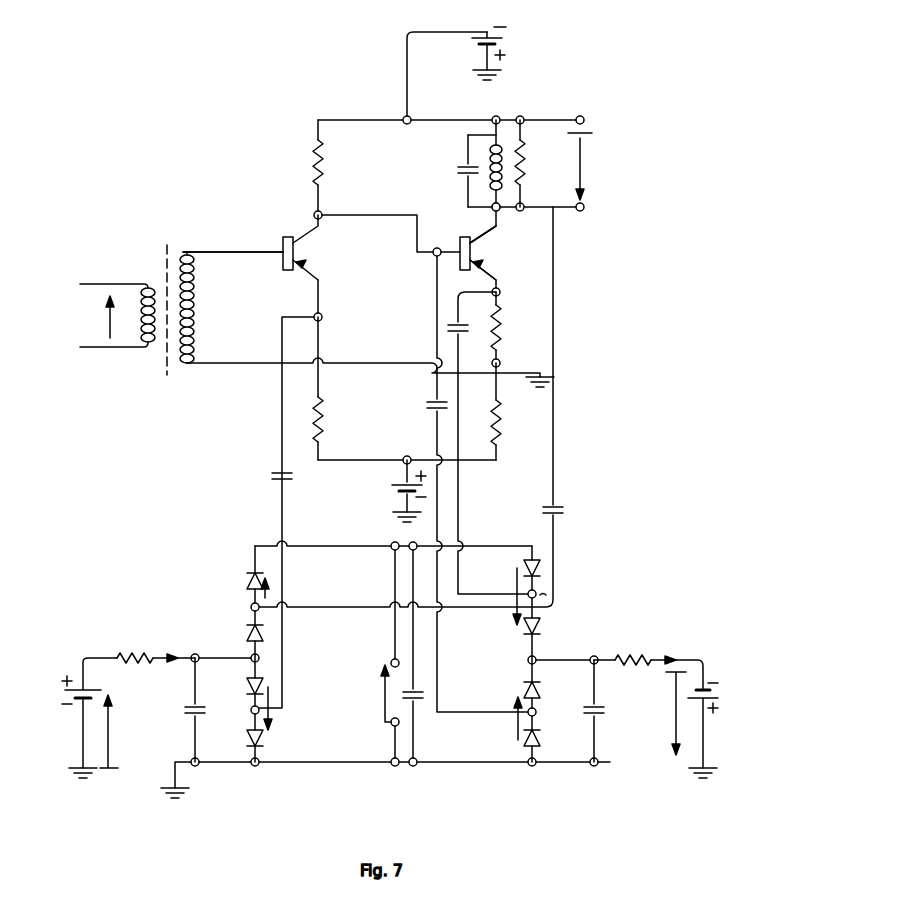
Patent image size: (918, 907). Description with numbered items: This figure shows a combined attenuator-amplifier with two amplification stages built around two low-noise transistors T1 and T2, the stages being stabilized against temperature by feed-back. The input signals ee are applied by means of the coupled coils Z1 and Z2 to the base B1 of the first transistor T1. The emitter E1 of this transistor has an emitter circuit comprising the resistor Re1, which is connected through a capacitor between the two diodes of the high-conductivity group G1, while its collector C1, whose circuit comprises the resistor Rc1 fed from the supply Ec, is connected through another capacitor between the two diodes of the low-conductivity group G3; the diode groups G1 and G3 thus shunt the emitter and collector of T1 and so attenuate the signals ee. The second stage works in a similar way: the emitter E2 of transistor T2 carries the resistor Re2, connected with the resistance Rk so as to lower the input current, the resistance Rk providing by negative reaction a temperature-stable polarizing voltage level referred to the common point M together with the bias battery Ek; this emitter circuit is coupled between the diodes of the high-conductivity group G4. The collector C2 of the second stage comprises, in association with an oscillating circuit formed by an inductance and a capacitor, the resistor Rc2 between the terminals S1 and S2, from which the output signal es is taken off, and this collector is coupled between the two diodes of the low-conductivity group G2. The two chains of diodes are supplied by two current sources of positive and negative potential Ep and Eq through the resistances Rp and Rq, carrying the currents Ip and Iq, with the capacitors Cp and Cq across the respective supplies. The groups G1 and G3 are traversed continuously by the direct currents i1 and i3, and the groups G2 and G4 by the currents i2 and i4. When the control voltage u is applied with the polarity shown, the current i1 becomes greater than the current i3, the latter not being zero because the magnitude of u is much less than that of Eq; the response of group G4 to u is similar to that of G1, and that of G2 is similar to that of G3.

The collector supply battery Ec is at (479, 53).
The output terminal S2 is at (588, 112).
The output terminal S1 is at (589, 211).
The output signal voltage es is at (583, 166).
The collector resistor of first transistor Rc1 is at (331, 167).
The collector of first transistor C1 is at (327, 207).
The collector resistor of second stage Rc2 is at (532, 163).
The collector of second transistor C2 is at (511, 220).
The first transistor T1 is at (299, 247).
The base of first transistor B1 is at (233, 245).
The emitter of first transistor E1 is at (327, 319).
The second transistor T2 is at (476, 250).
The emitter of second transistor E2 is at (505, 291).
The emitter resistor of second stage Re2 is at (509, 329).
The coil Z1 is at (117, 315).
The input signal ee is at (94, 317).
The coil Z2 is at (198, 307).
The emitter resistor of first transistor Re1 is at (332, 388).
The resistance Rk is at (505, 411).
The common ground point M is at (361, 601).
The bias battery Ek is at (395, 491).
The group of diodes G2 is at (242, 607).
The group of diodes G1 is at (242, 711).
The direct current i2 is at (270, 604).
The direct current i1 is at (275, 717).
The group of diodes G4 is at (549, 596).
The group of diodes G3 is at (542, 715).
The direct current i4 is at (508, 596).
The direct current i3 is at (504, 719).
The control voltage u is at (352, 695).
The positive potential source Ep is at (72, 718).
The resistance Rp is at (156, 648).
The supply current Ip is at (170, 647).
The capacitor Cp is at (184, 710).
The resistance Rq is at (648, 661).
The supply current Iq is at (671, 648).
The negative potential source Eq is at (707, 725).
The capacitor Cq is at (603, 711).